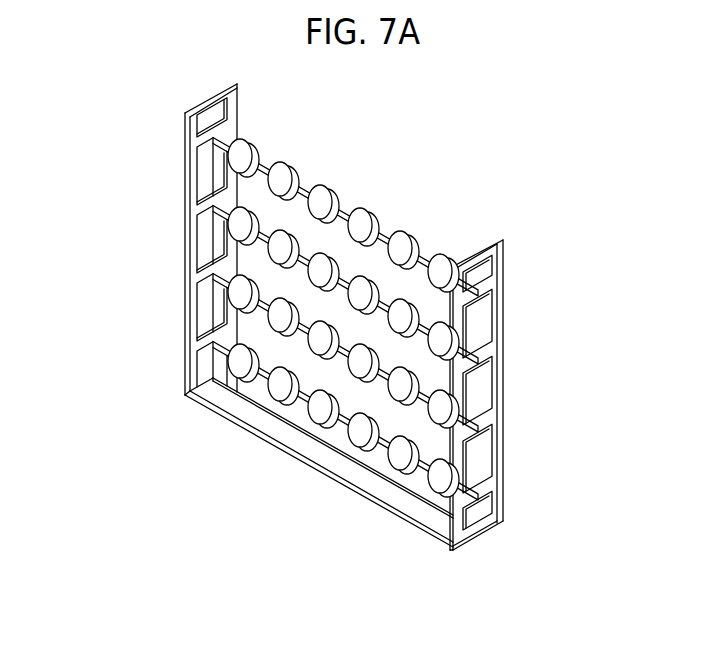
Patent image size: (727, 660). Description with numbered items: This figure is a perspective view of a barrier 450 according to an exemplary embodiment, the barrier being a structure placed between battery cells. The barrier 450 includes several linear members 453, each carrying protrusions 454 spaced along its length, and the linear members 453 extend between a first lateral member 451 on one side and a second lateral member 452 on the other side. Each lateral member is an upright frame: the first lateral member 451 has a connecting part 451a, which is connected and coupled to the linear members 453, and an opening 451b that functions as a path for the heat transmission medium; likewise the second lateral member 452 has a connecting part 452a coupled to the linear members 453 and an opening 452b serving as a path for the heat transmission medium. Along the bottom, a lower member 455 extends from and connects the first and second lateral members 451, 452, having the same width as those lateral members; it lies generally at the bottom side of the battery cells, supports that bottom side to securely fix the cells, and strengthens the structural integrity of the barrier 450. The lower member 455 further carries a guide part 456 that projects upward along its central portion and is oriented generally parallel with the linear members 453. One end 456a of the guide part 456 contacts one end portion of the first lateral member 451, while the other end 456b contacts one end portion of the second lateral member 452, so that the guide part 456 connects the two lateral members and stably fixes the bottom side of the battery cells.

The barrier 450 is at (500, 150).
The first lateral member 451 is at (84, 147).
The connecting part 451a is at (202, 212).
The opening 451b is at (206, 256).
The second lateral member 452 is at (605, 353).
The connecting part 452a is at (487, 355).
The opening 452b is at (482, 388).
The linear member 453 is at (387, 444).
The protrusion 454 is at (403, 458).
The lower member 455 is at (216, 404).
The guide part 456 is at (283, 438).
The one end of the guide part 456a is at (187, 392).
The another end of the guide part 456b is at (453, 523).